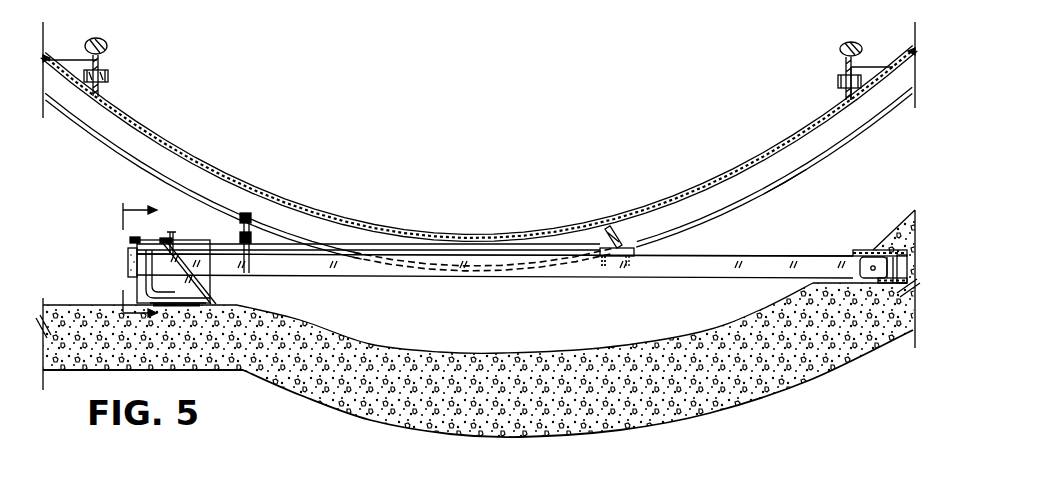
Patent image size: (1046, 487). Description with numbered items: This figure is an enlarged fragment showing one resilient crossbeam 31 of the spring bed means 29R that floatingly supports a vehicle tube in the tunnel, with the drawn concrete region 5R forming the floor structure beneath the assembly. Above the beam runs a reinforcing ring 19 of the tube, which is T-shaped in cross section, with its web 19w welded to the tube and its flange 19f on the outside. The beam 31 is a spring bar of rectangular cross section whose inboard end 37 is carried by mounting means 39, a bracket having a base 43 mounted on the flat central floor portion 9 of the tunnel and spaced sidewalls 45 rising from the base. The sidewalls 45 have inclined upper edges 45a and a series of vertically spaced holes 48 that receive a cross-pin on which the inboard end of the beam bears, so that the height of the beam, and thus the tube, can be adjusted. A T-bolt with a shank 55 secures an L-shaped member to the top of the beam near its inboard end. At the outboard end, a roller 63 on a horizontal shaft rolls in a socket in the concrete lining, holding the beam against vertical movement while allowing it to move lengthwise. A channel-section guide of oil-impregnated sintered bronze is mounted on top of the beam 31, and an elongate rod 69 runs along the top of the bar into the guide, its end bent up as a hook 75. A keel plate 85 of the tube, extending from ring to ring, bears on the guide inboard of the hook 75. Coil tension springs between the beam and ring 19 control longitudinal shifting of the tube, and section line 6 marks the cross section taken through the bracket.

The concrete foundation 5R is at (486, 352).
The flat central floor portion 9 is at (63, 306).
The reinforcing ring 19 is at (822, 172).
The web 19w is at (147, 152).
The flange 19f is at (771, 193).
The section line 6- 6 is at (127, 265).
The spring bed means 29R is at (675, 278).
The resilient crossbeam 31 is at (730, 277).
The inboard end 37 is at (130, 245).
The mounting means 39 is at (133, 285).
The base 43 is at (212, 304).
The sidewall 45 is at (188, 287).
The inclined upper edge 45a is at (196, 258).
The hole 48 is at (128, 265).
The shank 55 is at (255, 232).
The roller 63 is at (883, 252).
The rod 69 is at (360, 242).
The hook 75 is at (630, 233).
The keel plate 85 is at (616, 233).